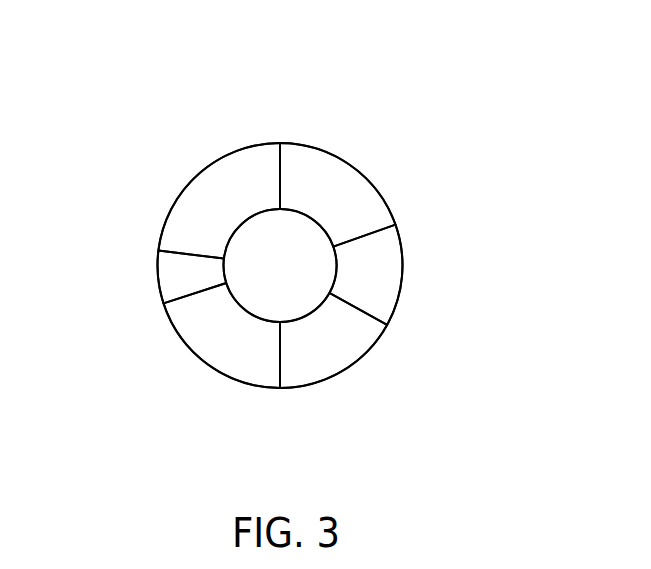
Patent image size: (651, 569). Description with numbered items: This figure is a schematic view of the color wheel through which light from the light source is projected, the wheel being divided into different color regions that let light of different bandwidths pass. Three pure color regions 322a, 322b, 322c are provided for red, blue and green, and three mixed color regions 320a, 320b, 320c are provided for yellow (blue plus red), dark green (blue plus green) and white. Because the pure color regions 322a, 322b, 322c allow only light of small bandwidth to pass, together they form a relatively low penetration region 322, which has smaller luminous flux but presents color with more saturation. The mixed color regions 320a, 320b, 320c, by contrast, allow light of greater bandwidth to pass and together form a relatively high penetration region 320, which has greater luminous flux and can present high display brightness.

The relatively high penetration region 320 is at (310, 75).
The mixed color region 320a is at (157, 270).
The mixed color region 320b is at (223, 158).
The mixed color region 320c is at (339, 157).
The relatively low penetration region 322 is at (330, 455).
The pure color region 322a is at (397, 300).
The pure color region 322b is at (327, 382).
The pure color region 322c is at (245, 387).